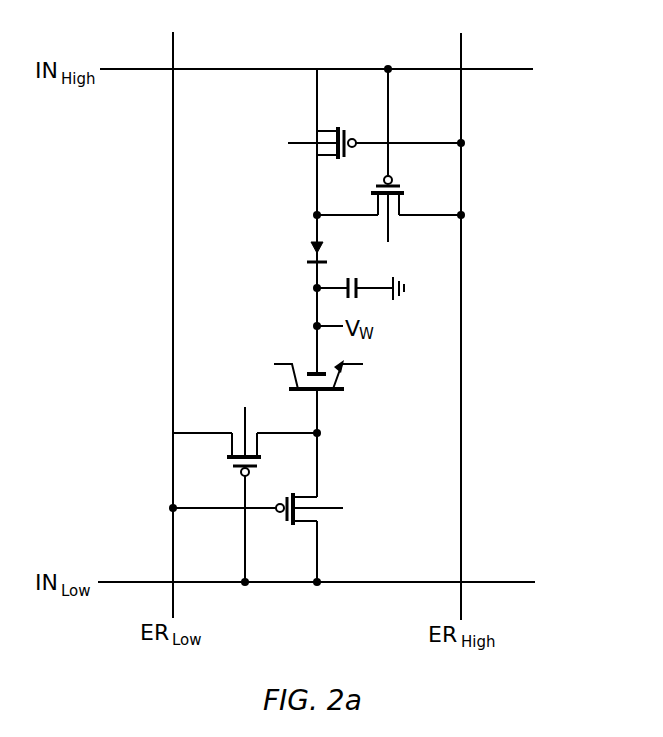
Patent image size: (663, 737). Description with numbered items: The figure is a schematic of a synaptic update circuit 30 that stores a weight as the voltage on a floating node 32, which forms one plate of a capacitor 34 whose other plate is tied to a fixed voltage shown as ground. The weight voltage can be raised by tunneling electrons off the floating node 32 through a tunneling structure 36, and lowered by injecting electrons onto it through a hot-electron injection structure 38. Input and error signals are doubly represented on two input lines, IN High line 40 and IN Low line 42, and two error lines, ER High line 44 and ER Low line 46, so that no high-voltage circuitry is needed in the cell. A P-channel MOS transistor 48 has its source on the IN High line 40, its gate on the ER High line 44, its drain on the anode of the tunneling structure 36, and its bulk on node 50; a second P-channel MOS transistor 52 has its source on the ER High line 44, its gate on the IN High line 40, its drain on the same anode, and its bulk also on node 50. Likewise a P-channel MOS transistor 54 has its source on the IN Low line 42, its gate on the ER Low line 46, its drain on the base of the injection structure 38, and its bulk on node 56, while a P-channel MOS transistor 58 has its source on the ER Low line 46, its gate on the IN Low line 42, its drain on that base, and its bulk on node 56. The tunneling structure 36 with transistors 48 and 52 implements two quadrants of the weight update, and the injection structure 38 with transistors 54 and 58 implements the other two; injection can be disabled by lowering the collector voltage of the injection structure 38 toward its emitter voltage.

The synaptic update circuit 30 is at (257, 22).
The floating node 32 is at (310, 307).
The capacitor 34 is at (350, 277).
The tunneling structure 36 is at (312, 251).
The hot-electron injection structure 38 is at (333, 392).
The IN High line 40 is at (497, 69).
The IN Low line 42 is at (503, 581).
The ER High line 44 is at (462, 596).
The ER Low line 46 is at (173, 593).
The P-channel MOS transistor 48 is at (338, 127).
The node 50 is at (303, 146).
The P-channel MOS transistor 52 is at (401, 186).
The P-channel MOS transistor 54 is at (293, 493).
The node 56 is at (245, 410).
The P-channel MOS transistor 58 is at (227, 457).